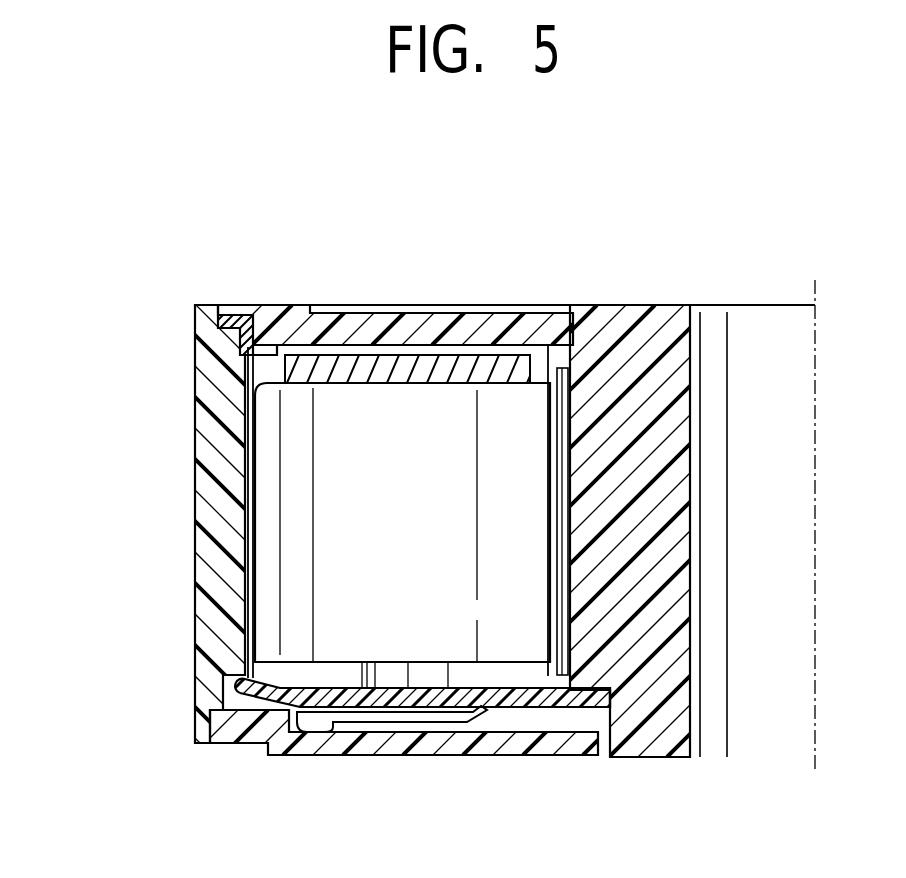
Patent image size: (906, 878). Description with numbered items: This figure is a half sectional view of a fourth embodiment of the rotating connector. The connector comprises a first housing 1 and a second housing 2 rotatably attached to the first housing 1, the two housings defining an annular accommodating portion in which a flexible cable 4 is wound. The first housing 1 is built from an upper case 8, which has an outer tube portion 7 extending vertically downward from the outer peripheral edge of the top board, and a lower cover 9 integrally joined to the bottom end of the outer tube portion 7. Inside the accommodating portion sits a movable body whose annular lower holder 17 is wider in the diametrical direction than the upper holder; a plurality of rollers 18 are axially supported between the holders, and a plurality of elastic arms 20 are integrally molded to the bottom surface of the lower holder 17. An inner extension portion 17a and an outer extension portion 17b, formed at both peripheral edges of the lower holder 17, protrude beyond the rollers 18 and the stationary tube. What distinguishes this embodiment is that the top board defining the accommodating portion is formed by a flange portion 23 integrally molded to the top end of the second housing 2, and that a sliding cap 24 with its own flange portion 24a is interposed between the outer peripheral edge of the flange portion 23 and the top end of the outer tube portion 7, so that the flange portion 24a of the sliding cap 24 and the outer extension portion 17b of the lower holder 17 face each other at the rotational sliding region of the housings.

The first housing 1 is at (65, 633).
The second housing 2 is at (635, 365).
The flexible cable 4 is at (250, 596).
The outer tube portion 7 is at (215, 537).
The upper case 8 is at (194, 655).
The lower cover 9 is at (215, 728).
The lower holder 17 is at (410, 700).
The inner extension portion 17a is at (580, 708).
The outer extension portion 17b is at (262, 695).
The rollers 18 is at (288, 462).
The elastic arms 20 is at (357, 722).
The flange portion 23 is at (436, 325).
The sliding cap 24 is at (233, 318).
The flange portion 24a is at (250, 352).